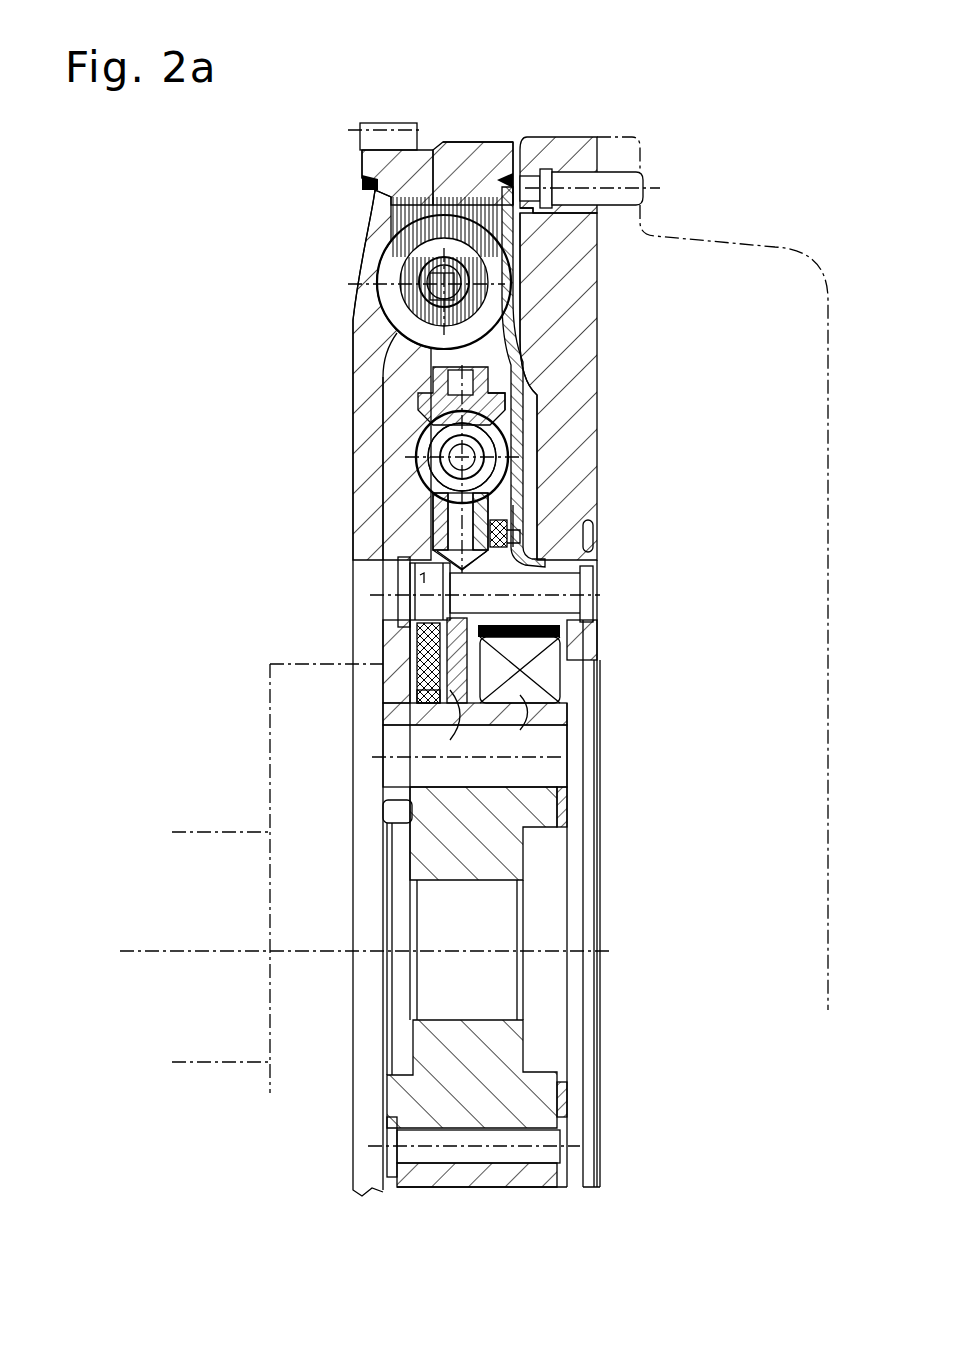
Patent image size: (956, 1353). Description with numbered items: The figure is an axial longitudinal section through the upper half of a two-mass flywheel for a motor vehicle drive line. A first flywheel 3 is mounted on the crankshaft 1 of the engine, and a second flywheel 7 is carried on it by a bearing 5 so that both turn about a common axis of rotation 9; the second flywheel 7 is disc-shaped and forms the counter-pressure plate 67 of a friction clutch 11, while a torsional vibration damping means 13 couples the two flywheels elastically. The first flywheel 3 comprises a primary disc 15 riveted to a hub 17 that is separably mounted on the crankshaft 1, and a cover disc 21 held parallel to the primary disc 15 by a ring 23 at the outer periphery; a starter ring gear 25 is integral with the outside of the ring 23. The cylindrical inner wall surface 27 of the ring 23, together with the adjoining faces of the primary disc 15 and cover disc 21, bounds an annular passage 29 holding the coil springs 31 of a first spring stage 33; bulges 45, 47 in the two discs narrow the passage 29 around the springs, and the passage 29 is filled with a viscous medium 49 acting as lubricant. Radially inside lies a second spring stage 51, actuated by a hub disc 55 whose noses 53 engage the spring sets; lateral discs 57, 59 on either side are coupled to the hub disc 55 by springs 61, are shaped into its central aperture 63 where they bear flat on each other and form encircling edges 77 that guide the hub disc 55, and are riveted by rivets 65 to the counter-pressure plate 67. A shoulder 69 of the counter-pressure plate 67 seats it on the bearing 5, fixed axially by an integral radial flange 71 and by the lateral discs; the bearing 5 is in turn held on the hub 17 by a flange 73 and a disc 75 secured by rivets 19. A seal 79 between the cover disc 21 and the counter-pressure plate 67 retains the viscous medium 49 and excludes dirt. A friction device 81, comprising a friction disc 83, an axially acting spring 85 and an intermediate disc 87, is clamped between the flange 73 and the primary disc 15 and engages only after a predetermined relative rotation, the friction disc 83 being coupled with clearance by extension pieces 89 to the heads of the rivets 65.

The crankshaft 1 is at (270, 795).
The first flywheel 3 is at (497, 126).
The bearing 5 is at (562, 745).
The second flywheel 7 is at (582, 120).
The axis of rotation 9 is at (612, 950).
The friction clutch 11 is at (793, 250).
The torsional vibration damping means 13 is at (336, 297).
The primary disc 15 is at (360, 283).
The hub 17 is at (386, 818).
The rivets 19 is at (483, 1153).
The cover disc 21 is at (524, 322).
The ring 23 is at (407, 163).
The starter ring gear 25 is at (378, 127).
The inner wall surface 27 is at (428, 195).
The passage 29 is at (395, 204).
The coil springs 31 is at (538, 335).
The first spring stage 33 is at (370, 247).
The bulge 45 is at (345, 313).
The bulge 47 is at (595, 248).
The viscous medium 49 is at (480, 183).
The second spring stage 51 is at (427, 423).
The noses 53 is at (545, 300).
The hub disc 55 is at (455, 512).
The lateral disc 57 is at (427, 373).
The lateral disc 59 is at (507, 398).
The springs 61 is at (497, 470).
The aperture 63 is at (437, 517).
The rivets 65 is at (560, 603).
The counter-pressure plate 67 is at (583, 373).
The shoulder 69 is at (522, 693).
The radial flange 71 is at (585, 643).
The flange 73 is at (448, 740).
The disc 75 is at (565, 813).
The encircling edge 77 is at (458, 566).
The seal 79 is at (517, 533).
The friction device 81 is at (392, 666).
The friction disc 83 is at (410, 640).
The axially acting spring 85 is at (413, 627).
The intermediate disc 87 is at (412, 682).
The extension pieces 89 is at (413, 580).